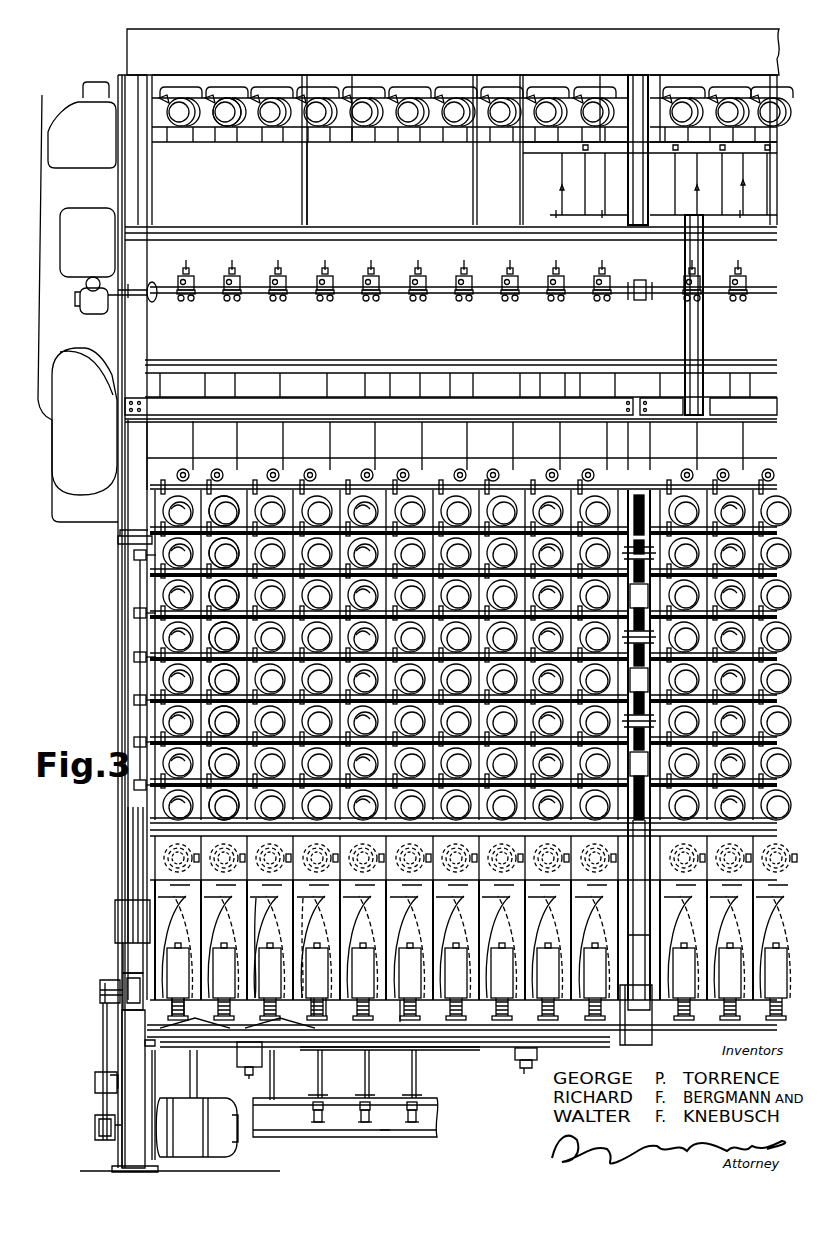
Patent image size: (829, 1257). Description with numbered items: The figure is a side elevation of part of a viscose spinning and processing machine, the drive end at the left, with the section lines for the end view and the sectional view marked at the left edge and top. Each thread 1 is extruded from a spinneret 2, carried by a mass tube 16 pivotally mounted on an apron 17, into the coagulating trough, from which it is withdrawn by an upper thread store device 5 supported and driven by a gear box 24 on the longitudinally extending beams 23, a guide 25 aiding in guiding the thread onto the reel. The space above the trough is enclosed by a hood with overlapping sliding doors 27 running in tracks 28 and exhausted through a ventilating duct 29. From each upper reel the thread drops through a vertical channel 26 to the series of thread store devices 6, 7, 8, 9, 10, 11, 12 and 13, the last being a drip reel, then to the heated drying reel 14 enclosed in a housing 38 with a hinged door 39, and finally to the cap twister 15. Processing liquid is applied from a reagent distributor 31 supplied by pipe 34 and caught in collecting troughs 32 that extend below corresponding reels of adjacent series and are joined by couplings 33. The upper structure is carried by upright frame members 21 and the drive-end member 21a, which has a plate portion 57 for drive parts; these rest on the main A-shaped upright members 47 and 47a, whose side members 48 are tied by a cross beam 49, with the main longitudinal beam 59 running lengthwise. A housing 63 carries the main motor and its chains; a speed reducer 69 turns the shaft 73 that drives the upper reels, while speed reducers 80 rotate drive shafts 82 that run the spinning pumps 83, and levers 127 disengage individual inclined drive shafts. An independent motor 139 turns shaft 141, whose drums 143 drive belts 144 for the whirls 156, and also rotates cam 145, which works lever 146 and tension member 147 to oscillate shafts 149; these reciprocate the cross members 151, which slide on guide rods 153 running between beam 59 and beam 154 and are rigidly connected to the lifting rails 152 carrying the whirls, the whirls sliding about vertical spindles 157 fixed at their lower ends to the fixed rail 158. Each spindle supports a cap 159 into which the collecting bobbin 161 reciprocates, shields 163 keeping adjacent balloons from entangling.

The thread 1 is at (70, 1175).
The spinneret 2 is at (438, 163).
The thread store device 5 is at (450, 112).
The thread store device 6 is at (448, 511).
The thread store device 7 is at (448, 553).
The thread store device 8 is at (448, 595).
The thread store device 9 is at (448, 637).
The thread store device 10 is at (451, 679).
The thread store device 11 is at (451, 721).
The thread store device 12 is at (451, 763).
The drip reel 13 is at (451, 805).
The drying reel 14 is at (208, 902).
The cap twister 15 is at (474, 952).
The mass tube 16 is at (558, 214).
The apron 17 is at (406, 243).
The upright frame member 21 is at (652, 440).
The drive-end upright frame member 21a is at (145, 440).
The longitudinally extending beam 23 is at (530, 140).
The gear box 24 is at (223, 92).
The guide 25 is at (585, 150).
The vertically extending channel 26 is at (239, 390).
The sliding door 27 is at (224, 194).
The track 28 is at (268, 228).
The ventilating duct 29 is at (332, 52).
The reagent distributor 31 is at (264, 480).
The collecting trough 32 is at (343, 517).
The coupling 33 is at (639, 750).
The pipe 34 is at (343, 490).
The housing 38 is at (156, 866).
The hinged door 39 is at (165, 838).
The upright member 47 is at (650, 1042).
The drive-end upright member 47a is at (150, 1166).
The side member 48 is at (127, 656).
The cross beam 49 is at (120, 548).
The plate portion 57 is at (118, 184).
The main longitudinal beam 59 is at (390, 996).
The housing 63 is at (50, 238).
The speed reducer 69 is at (90, 75).
The shaft 73 is at (156, 80).
The speed reducer 80 is at (93, 314).
The drive shaft 82 is at (150, 286).
The spinning pump 83 is at (240, 302).
The lever 127 is at (310, 470).
The motor 139 is at (196, 1134).
The shaft 141 is at (158, 1026).
The drum 143 is at (172, 1037).
The belt 144 is at (205, 1044).
The cam 145 is at (104, 1076).
The lever 146 is at (102, 1138).
The tension member 147 is at (92, 1071).
The shaft 149 is at (124, 988).
The cross member 151 is at (239, 1064).
The lifting rail 152 is at (345, 1047).
The guide rod 153 is at (262, 1085).
The beam 154 is at (373, 1120).
The whirl 156 is at (228, 1010).
The spindle 157 is at (318, 1086).
The fixed rail 158 is at (300, 1132).
The cap 159 is at (510, 956).
The collecting bobbin 161 is at (314, 1010).
The shield 163 is at (338, 928).